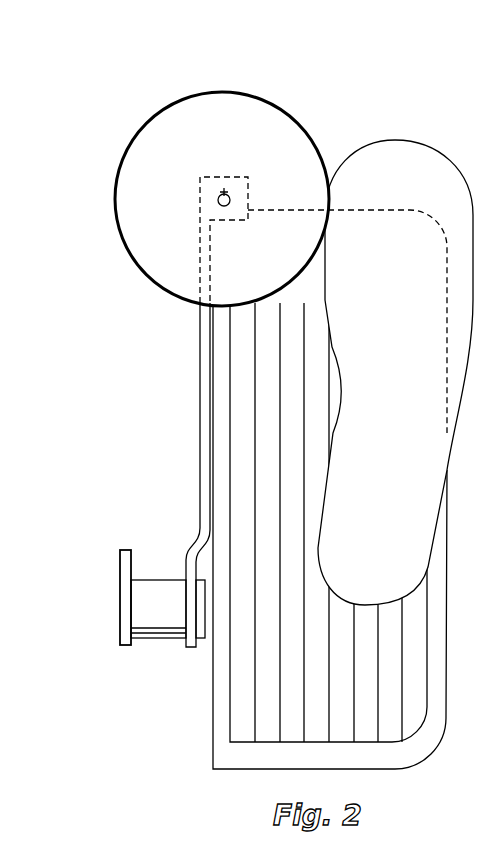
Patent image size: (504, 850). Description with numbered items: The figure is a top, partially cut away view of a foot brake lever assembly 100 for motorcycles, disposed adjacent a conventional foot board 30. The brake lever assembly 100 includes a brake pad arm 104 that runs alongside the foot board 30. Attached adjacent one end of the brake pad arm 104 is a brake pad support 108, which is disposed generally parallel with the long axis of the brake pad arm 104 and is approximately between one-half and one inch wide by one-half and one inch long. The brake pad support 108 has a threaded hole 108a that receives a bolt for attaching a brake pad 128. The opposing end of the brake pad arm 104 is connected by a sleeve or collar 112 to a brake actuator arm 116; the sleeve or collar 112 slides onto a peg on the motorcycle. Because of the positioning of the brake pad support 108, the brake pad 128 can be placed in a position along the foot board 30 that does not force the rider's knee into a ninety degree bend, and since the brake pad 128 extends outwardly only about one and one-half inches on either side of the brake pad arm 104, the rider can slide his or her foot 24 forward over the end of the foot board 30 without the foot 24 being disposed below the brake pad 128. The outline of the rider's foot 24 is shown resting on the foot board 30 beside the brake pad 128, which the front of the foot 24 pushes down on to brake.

The brake lever assembly 100 is at (136, 429).
The brake pad arm 104 is at (199, 362).
The brake pad support 108 is at (241, 188).
The threaded hole 108a is at (226, 191).
The sleeve or collar 112 is at (153, 579).
The brake actuator arm 116 is at (125, 549).
The brake pad 128 is at (202, 93).
The foot 24 is at (408, 431).
The foot board 30 is at (435, 590).